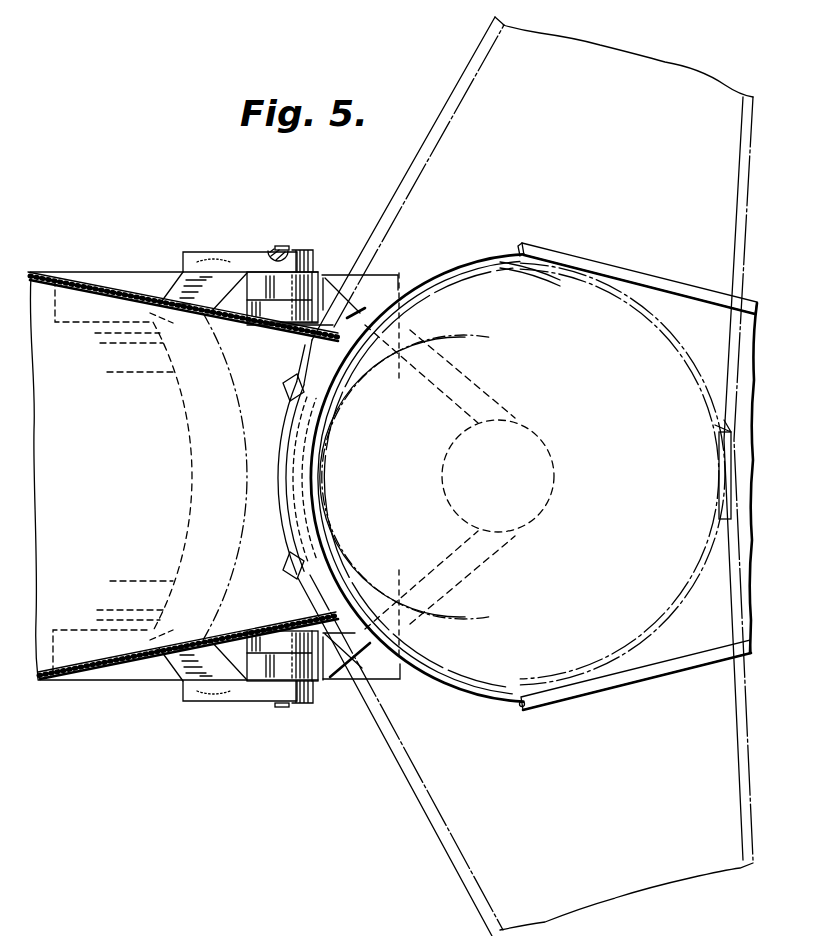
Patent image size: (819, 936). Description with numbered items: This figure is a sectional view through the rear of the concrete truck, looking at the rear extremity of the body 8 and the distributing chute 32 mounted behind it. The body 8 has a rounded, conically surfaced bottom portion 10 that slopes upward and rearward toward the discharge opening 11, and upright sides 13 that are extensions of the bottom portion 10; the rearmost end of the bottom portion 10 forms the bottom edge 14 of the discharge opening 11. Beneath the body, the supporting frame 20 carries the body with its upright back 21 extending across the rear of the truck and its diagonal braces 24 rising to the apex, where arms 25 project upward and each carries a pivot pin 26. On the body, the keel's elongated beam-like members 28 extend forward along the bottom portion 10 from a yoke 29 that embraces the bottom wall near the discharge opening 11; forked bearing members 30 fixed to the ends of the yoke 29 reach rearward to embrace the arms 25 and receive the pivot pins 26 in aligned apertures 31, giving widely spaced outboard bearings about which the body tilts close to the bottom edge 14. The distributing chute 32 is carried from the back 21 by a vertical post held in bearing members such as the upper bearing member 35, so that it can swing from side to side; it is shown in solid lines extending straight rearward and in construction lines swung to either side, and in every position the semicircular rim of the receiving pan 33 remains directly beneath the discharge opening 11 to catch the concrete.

The body 8 is at (78, 707).
The bottom portion 10 is at (46, 337).
The discharge opening 11 is at (313, 472).
The sides 13 is at (80, 282).
The bottom edge 14 is at (316, 438).
The supporting frame 20 is at (141, 702).
The upright back 21 is at (357, 266).
The diagonal braces 24 is at (113, 282).
The arms 25 is at (312, 283).
The pivot pin 26 is at (295, 250).
The beam-like members 28 is at (133, 367).
The yoke 29 is at (192, 423).
The bearing members 30 is at (252, 257).
The apertures 31 is at (280, 250).
The distributing chute 32 is at (644, 242).
The receiving pan 33 is at (470, 297).
The upper bearing member 35 is at (550, 461).